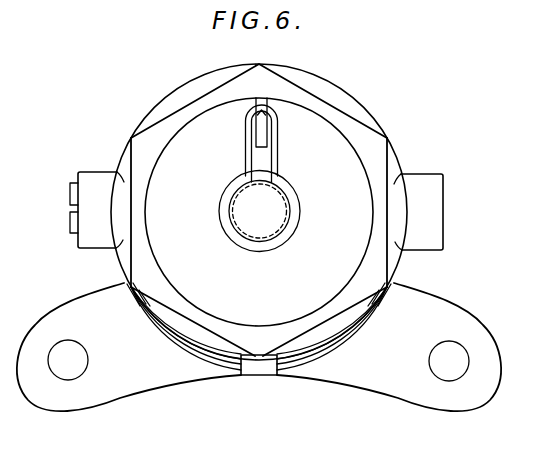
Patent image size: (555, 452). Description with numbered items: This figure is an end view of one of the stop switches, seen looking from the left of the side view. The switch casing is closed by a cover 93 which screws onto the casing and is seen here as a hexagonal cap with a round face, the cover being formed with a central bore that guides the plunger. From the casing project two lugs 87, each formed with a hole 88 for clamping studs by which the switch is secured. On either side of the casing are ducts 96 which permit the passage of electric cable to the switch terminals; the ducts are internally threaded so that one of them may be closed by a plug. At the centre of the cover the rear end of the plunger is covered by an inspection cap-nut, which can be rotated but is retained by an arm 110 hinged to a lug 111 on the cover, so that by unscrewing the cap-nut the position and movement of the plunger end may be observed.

The cover 93 is at (338, 172).
The ducts 96 is at (100, 232).
The arm 110 is at (278, 140).
The lug 111 is at (278, 104).
The lugs 87 is at (50, 390).
The holes 88 is at (77, 367).